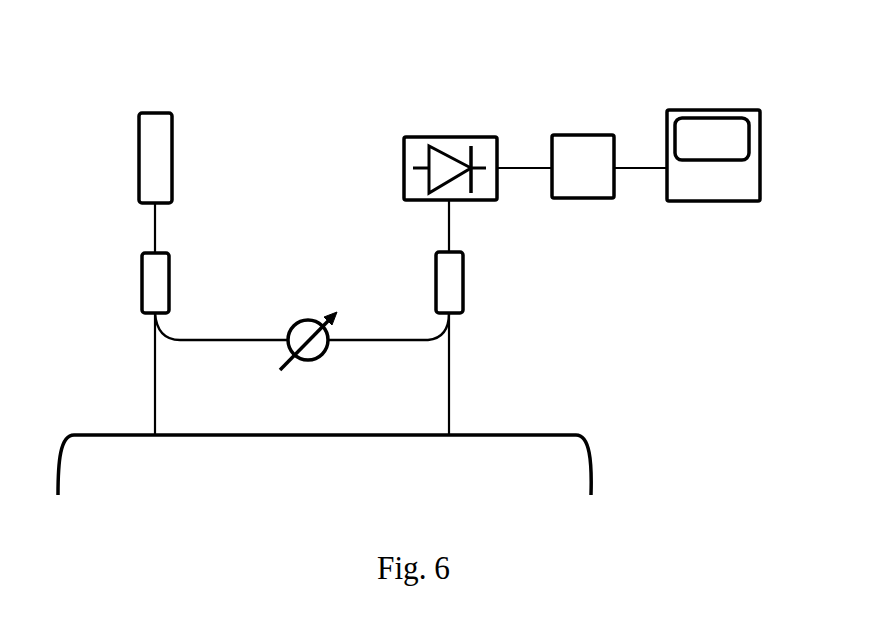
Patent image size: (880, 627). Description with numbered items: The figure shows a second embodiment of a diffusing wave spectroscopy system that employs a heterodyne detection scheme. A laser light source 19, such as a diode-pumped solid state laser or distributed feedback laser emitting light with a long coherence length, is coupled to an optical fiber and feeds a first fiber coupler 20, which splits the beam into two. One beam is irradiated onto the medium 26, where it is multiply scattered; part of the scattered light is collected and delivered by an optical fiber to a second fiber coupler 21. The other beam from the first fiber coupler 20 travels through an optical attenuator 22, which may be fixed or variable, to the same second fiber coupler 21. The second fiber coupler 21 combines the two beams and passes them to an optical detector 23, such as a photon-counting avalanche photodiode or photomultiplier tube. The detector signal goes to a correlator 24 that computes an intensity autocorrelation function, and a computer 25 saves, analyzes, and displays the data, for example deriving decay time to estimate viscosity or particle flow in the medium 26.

The laser light source 19 is at (136, 158).
The first fiber coupler 20 is at (134, 283).
The second fiber coupler 21 is at (470, 282).
The optical attenuator 22 is at (308, 315).
The optical detector 23 is at (429, 168).
The correlator 24 is at (583, 144).
The computer 25 is at (713, 133).
The medium 26 is at (324, 465).